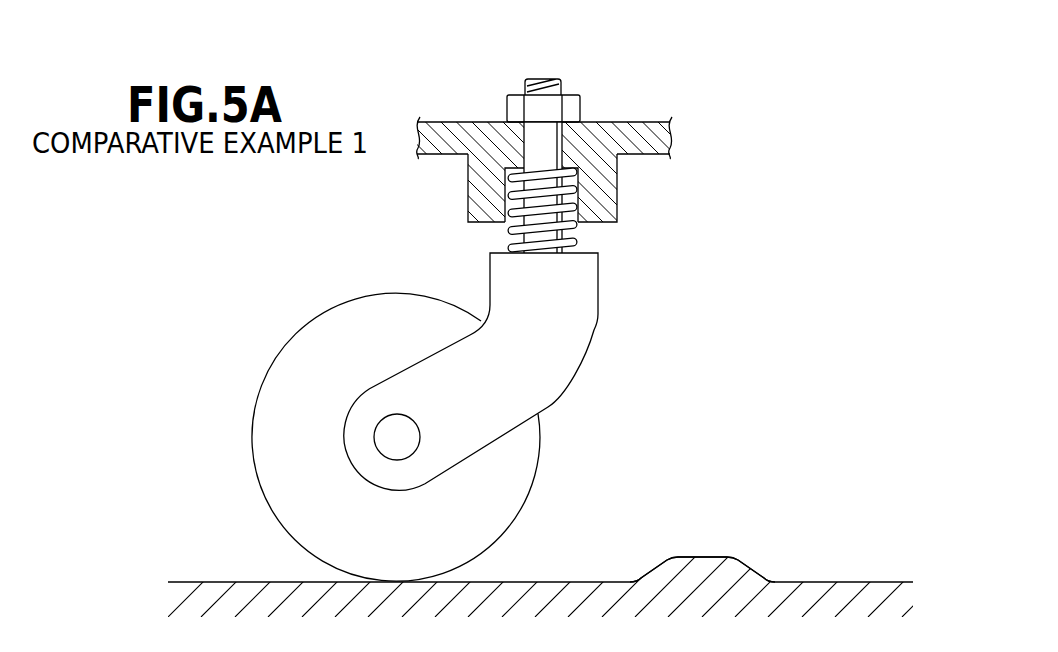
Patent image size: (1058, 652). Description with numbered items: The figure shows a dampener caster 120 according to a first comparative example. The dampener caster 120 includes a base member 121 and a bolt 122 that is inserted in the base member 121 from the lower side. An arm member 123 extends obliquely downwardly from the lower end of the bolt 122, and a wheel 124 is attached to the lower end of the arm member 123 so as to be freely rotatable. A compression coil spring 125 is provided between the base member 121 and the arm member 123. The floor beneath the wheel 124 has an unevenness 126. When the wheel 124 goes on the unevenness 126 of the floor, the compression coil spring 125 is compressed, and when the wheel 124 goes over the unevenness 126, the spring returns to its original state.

The dampener caster 120 is at (500, 293).
The base member 121 is at (661, 137).
The bolt 122 is at (541, 79).
The arm member 123 is at (556, 388).
The wheel 124 is at (273, 367).
The compression coil spring 125 is at (596, 140).
The unevenness 126 is at (708, 557).